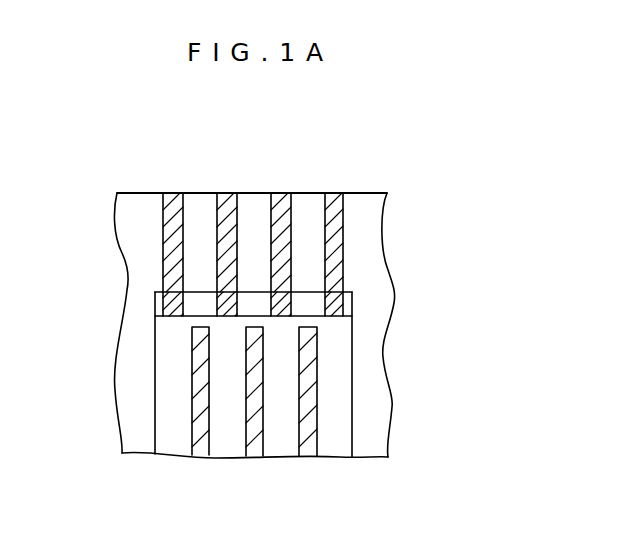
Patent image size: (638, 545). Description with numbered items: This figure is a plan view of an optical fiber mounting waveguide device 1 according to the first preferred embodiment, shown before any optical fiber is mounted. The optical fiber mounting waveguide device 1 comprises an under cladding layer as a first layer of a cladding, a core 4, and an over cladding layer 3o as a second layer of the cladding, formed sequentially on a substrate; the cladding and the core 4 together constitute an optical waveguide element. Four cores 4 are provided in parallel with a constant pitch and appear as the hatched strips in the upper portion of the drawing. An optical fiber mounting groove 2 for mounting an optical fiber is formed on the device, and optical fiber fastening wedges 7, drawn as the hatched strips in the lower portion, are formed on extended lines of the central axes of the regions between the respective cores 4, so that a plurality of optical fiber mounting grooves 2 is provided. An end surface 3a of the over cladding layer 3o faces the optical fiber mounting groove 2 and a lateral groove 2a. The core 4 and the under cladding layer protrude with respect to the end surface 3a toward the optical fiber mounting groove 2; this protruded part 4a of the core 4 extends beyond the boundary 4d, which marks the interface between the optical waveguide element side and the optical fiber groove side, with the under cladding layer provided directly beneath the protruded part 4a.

The optical fiber mounting waveguide device 1 is at (144, 365).
The optical fiber mounting groove 2 is at (170, 442).
The lateral groove 2a is at (190, 323).
The over cladding layer 3o is at (201, 207).
The end surface 3a is at (307, 319).
The core 4 is at (333, 206).
The protruded part 4a is at (343, 298).
The boundary 4d is at (312, 294).
The optical fiber fastening wedge 7 is at (203, 440).